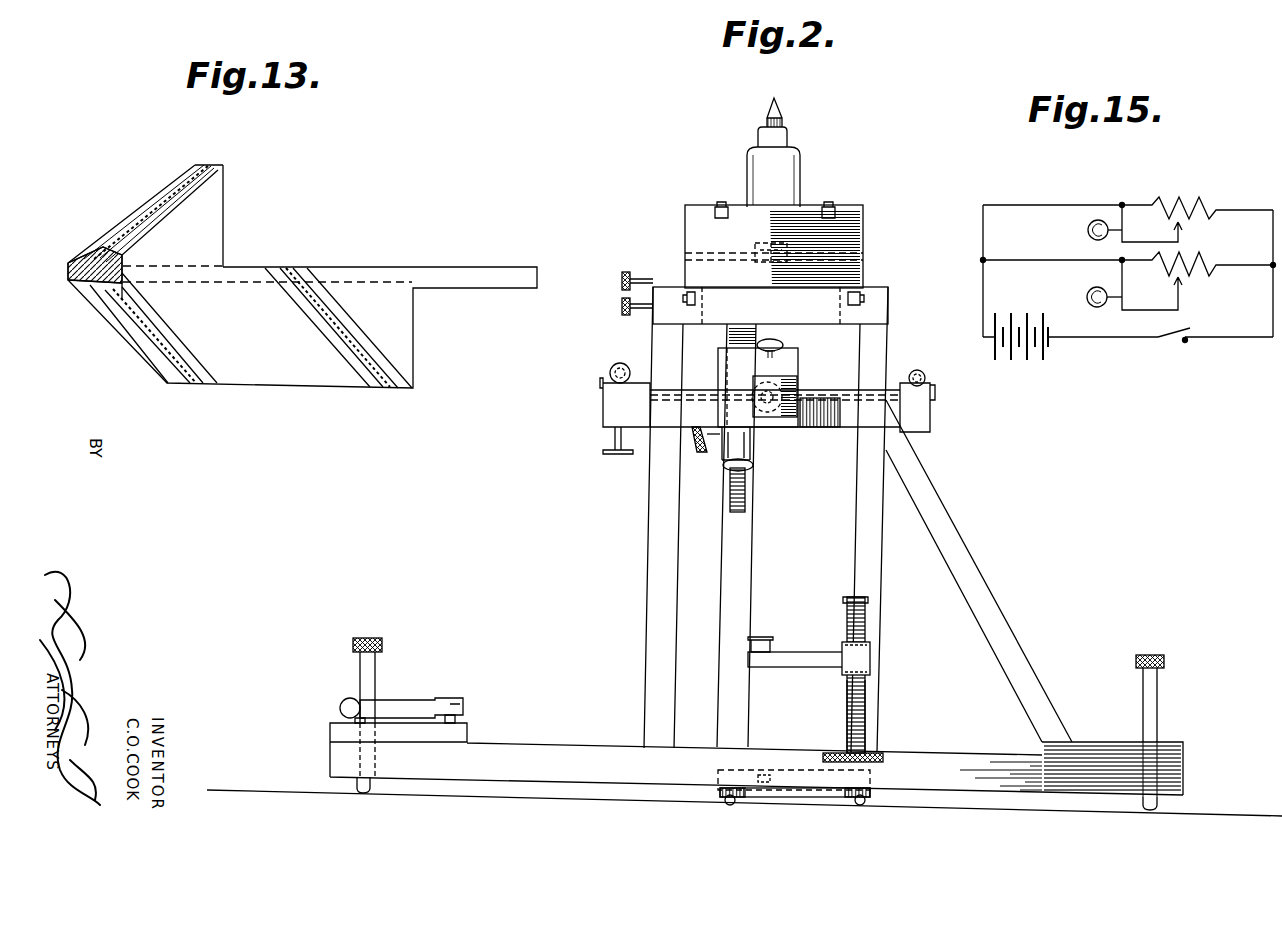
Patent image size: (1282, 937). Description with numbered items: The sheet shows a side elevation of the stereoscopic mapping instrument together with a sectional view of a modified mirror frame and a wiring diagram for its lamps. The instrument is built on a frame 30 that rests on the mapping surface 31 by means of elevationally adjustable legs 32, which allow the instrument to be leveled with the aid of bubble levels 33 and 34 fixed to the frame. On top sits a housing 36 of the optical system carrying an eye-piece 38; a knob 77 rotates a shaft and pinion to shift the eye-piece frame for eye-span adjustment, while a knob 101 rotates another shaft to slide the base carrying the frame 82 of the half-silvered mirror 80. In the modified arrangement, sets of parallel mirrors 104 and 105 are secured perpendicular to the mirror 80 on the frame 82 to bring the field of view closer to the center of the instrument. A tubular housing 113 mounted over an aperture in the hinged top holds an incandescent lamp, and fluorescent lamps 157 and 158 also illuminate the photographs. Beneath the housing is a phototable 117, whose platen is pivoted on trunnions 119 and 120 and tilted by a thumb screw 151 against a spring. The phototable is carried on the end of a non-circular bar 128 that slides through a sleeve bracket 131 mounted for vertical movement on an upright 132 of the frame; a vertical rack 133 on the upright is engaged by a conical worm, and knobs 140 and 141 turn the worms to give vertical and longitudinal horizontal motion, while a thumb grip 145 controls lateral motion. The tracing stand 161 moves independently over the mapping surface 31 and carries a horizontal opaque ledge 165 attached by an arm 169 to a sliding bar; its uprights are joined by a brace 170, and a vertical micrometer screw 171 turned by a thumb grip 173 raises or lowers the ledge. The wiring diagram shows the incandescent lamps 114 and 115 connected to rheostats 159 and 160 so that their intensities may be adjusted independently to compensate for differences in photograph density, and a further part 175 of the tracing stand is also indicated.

In FIG. 13, the half-silvered mirror 80 is at (150, 225).
In FIG. 13, the movable frame 82 is at (383, 268).
In FIG. 13, the set of parallel mirrors 104 is at (170, 342).
In FIG. 13, the set of parallel mirrors 105 is at (352, 338).
In FIG. 2, the tubular housing 113 is at (745, 168).
In FIG. 2, the housing 36 is at (684, 238).
In FIG. 2, the eye-piece 38 is at (772, 245).
In FIG. 2, the knob 77 is at (620, 283).
In FIG. 2, the knob 101 is at (620, 305).
In FIG. 2, the frame 30 is at (645, 592).
In FIG. 2, the mapping surface 31 is at (240, 790).
In FIG. 2, the elevationally adjustable legs 32 is at (345, 790).
In FIG. 2, the bubble level 33 is at (425, 700).
In FIG. 2, the bubble level 34 is at (348, 705).
In FIG. 2, the upright 132 is at (752, 560).
In FIG. 2, the vertical rack 133 is at (745, 500).
In FIG. 2, the knob 140 is at (752, 465).
In FIG. 2, the knob 141 is at (782, 343).
In FIG. 2, the thumb grip 145 is at (703, 454).
In FIG. 2, the thumb screw 151 is at (620, 455).
In FIG. 2, the trunnion 120 is at (600, 388).
In FIG. 2, the trunnion 119 is at (935, 393).
In FIG. 2, the fluorescent lamp 157 is at (925, 363).
In FIG. 2, the fluorescent lamp 158 is at (622, 363).
In FIG. 2, the sleeve bracket 131 is at (722, 362).
In FIG. 2, the bar 128 is at (795, 383).
In FIG. 2, the phototable 117 is at (836, 433).
In FIG. 2, the horizontal opaque ledge 165 is at (768, 637).
In FIG. 2, the arm 169 is at (800, 667).
In FIG. 2, the brace 170 is at (870, 602).
In FIG. 2, the vertical micrometer screw 171 is at (845, 712).
In FIG. 2, the thumb grip 173 is at (880, 755).
In FIG. 2, the tracing stand 161 is at (716, 803).
In FIG. 2, the carriage rod 175 is at (757, 797).
In FIG. 15, the incandescent lamp 114 is at (1087, 230).
In FIG. 15, the incandescent lamp 115 is at (1087, 297).
In FIG. 15, the rheostat 159 is at (1175, 204).
In FIG. 15, the rheostat 160 is at (1209, 272).